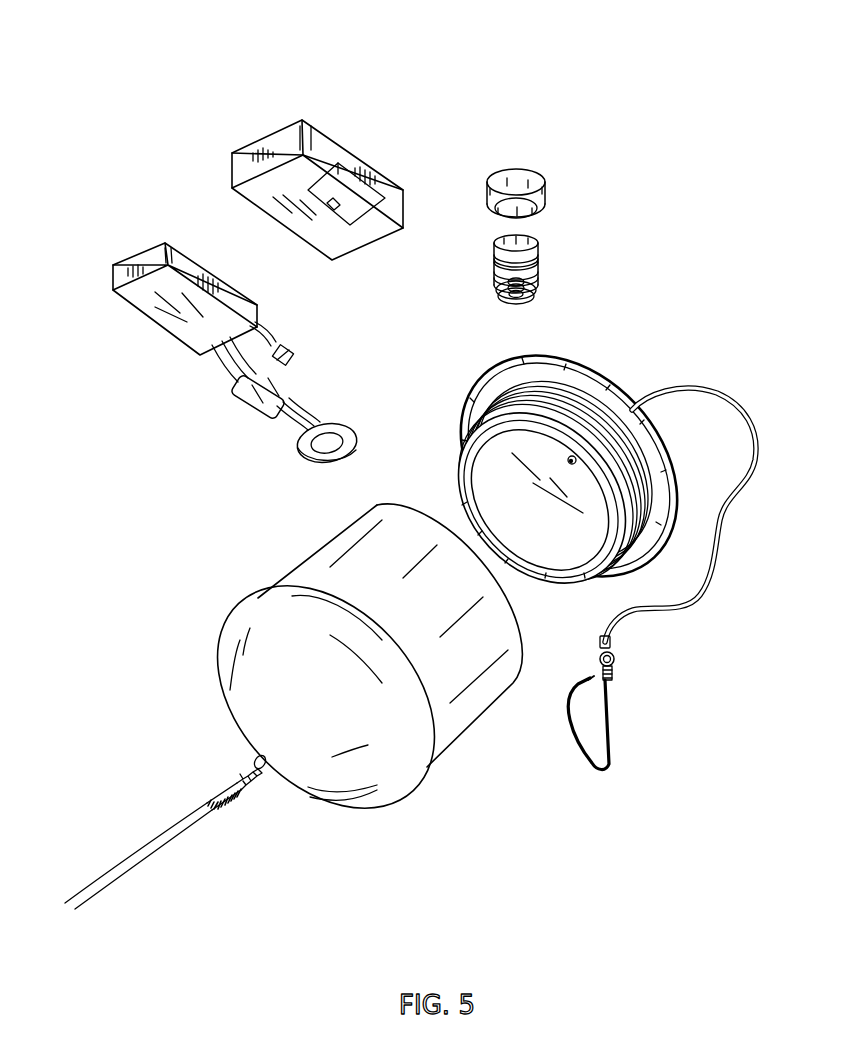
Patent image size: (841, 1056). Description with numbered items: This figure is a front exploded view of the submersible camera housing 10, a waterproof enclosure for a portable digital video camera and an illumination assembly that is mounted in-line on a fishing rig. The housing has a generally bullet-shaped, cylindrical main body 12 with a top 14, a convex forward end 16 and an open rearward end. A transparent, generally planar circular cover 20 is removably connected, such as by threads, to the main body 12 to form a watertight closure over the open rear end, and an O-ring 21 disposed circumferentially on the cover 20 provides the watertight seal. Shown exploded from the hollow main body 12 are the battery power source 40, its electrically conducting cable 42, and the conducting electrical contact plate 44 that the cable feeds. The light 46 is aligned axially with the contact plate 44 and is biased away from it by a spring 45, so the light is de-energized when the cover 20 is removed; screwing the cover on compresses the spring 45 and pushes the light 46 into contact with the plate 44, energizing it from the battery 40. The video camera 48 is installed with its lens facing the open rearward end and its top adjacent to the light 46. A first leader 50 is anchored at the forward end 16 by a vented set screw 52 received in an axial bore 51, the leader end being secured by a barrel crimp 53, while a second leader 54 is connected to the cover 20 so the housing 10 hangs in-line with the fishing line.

The submersible camera housing 10 is at (689, 286).
The main body 12 is at (318, 540).
The top 14 is at (283, 574).
The forward end 16 is at (268, 718).
The cover 20 is at (603, 392).
The O-ring 21 is at (492, 388).
The battery power source 40 is at (133, 297).
The electrically conducting cable 42 is at (243, 400).
The conducting electrical contact plate 44 is at (352, 433).
The spring 45 is at (500, 297).
The light 46 is at (558, 182).
The video camera 48 is at (332, 146).
The first leader 50 is at (162, 843).
The axial bore 51 is at (258, 775).
The vented set screw 52 is at (205, 800).
The barrel crimp 53 is at (241, 773).
The second leader 54 is at (733, 403).